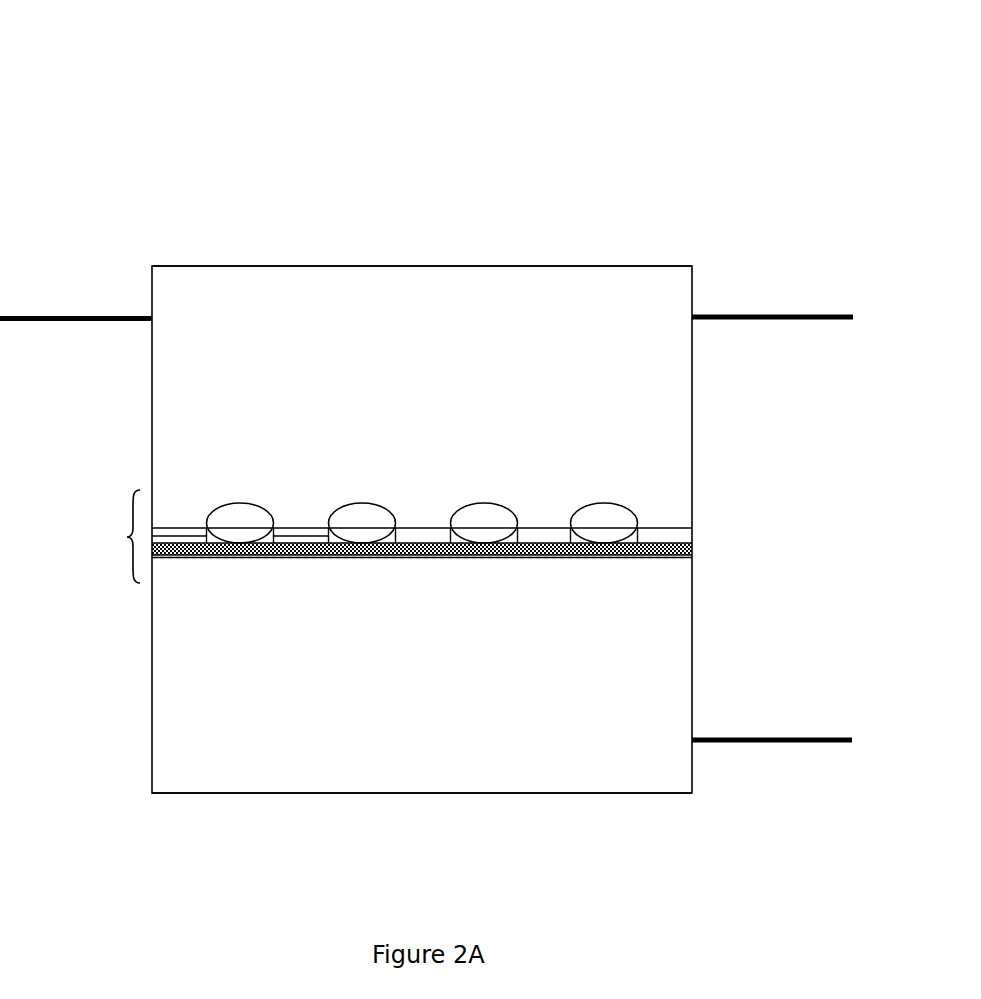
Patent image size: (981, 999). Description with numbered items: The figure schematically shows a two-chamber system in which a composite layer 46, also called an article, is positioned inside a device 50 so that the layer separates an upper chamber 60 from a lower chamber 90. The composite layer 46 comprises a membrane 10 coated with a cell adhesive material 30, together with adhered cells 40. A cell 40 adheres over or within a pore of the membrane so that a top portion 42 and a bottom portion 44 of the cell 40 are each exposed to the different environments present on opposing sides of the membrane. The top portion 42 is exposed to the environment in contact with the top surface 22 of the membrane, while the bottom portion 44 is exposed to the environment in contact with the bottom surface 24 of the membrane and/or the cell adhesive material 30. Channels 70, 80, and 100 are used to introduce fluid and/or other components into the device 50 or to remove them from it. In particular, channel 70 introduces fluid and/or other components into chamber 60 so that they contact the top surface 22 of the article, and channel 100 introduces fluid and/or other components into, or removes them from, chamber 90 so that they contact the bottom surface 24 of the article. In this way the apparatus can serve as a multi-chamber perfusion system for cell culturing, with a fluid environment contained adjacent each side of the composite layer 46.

The device 50 is at (147, 94).
The chamber 60 is at (404, 279).
The chamber 90 is at (403, 780).
The channel 70 is at (53, 307).
The channel 80 is at (790, 305).
The channel 100 is at (775, 752).
The membrane 10 is at (665, 528).
The top surface 22 is at (653, 500).
The bottom surface 24 is at (648, 568).
The cell adhesive material 30 is at (435, 556).
The cell 40 is at (366, 518).
The top portion 42 is at (232, 503).
The bottom portion 44 is at (235, 540).
The composite layer 46 is at (114, 536).